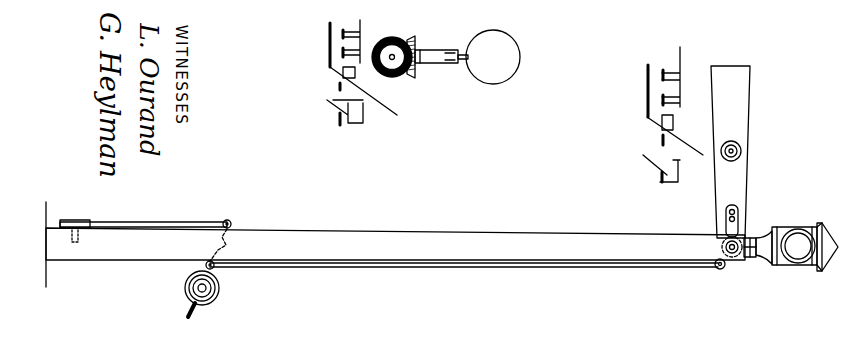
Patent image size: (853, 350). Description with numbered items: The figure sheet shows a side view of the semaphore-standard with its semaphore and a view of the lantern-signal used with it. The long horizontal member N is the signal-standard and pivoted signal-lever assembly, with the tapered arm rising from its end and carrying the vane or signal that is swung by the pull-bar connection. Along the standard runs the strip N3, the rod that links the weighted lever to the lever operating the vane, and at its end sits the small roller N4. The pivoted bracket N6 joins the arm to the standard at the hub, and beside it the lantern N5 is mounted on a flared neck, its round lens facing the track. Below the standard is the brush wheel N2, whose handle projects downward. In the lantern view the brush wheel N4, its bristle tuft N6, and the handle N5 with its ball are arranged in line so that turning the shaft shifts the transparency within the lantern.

In FIG. 7, the lamp-carrying bar and arm N is at (92, 220).
In FIG. 7, the brush wheel N2 is at (207, 302).
In FIG. 7, the sliding strip N3 is at (462, 276).
In FIG. 7, the roller / brush wheel N4 is at (727, 267).
In FIG. 9, the roller / brush wheel N4 is at (386, 66).
In FIG. 7, the lamp and handle N5 is at (772, 296).
In FIG. 9, the lamp and handle N5 is at (428, 65).
In FIG. 7, the bracket / brush tuft N6 is at (762, 236).
In FIG. 9, the bracket / brush tuft N6 is at (416, 41).